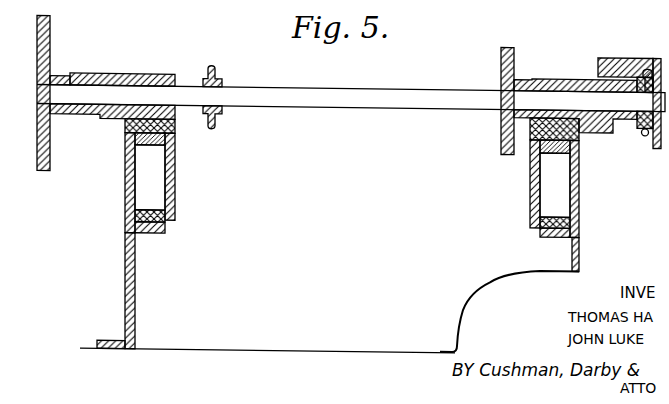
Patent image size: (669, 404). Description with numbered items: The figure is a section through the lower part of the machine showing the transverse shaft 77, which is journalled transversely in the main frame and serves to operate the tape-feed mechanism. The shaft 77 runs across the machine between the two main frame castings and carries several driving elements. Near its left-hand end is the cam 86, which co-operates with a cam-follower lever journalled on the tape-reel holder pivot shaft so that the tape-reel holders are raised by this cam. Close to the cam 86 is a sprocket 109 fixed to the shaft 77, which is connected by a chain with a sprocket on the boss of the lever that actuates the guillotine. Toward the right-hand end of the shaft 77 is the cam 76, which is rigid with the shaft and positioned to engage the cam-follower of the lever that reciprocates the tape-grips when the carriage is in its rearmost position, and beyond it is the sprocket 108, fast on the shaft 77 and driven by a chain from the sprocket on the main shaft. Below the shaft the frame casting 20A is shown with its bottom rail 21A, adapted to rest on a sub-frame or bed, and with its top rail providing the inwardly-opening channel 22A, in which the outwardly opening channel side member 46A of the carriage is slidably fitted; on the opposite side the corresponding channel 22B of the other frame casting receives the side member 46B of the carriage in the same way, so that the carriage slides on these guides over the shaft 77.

The cam 86 is at (53, 51).
The sprocket 109 is at (217, 68).
The shaft 77 is at (362, 87).
The cam 76 is at (517, 48).
The sprocket 108 is at (641, 126).
The channel 22A is at (133, 163).
The side member 46A is at (176, 198).
The frame casting 20A is at (136, 300).
The bottom rail 21A is at (105, 338).
The channel 22B is at (575, 174).
The side member 46B is at (530, 193).